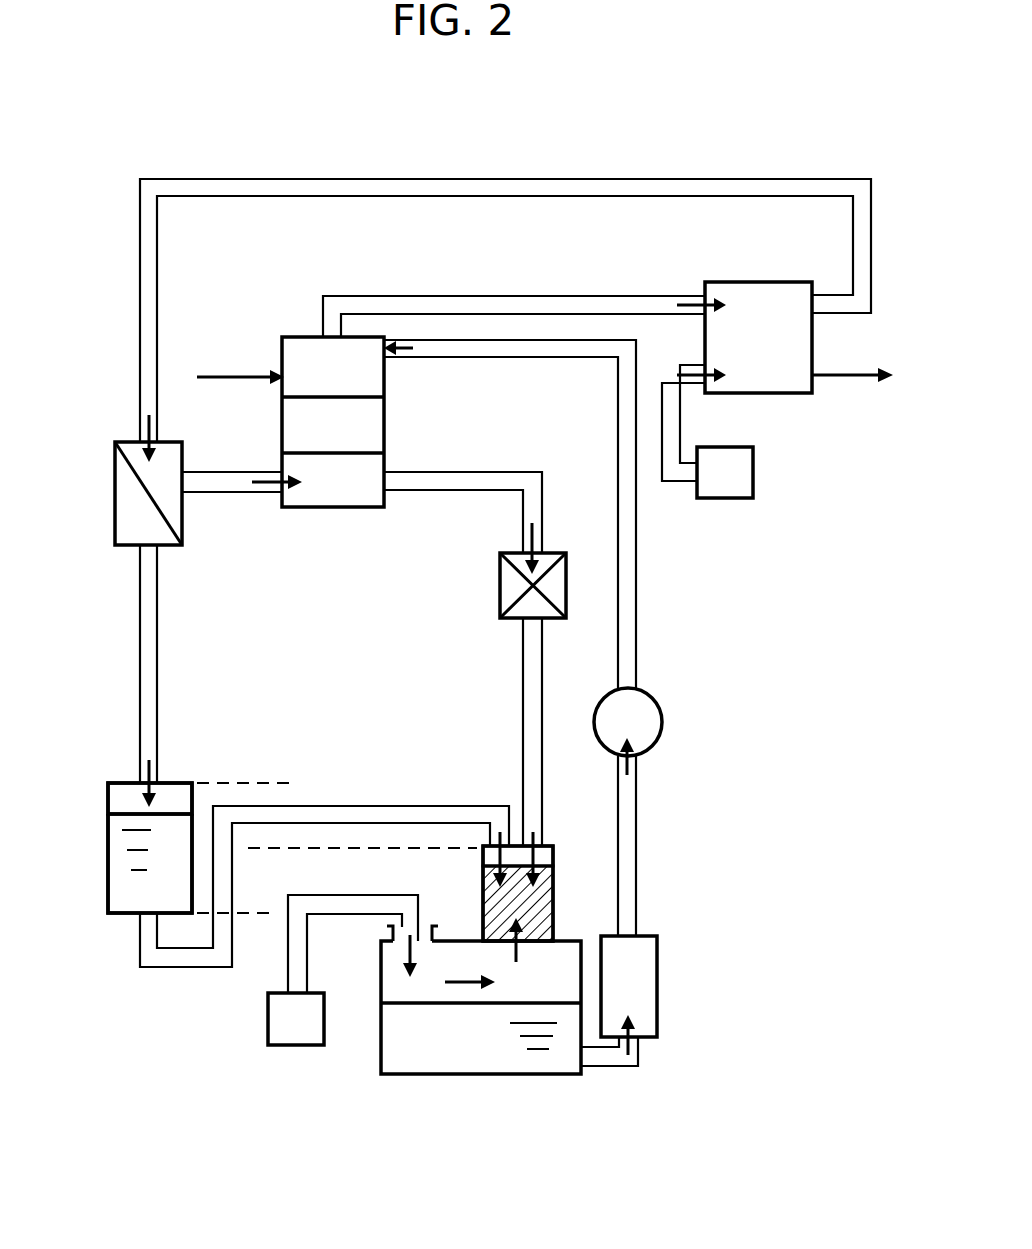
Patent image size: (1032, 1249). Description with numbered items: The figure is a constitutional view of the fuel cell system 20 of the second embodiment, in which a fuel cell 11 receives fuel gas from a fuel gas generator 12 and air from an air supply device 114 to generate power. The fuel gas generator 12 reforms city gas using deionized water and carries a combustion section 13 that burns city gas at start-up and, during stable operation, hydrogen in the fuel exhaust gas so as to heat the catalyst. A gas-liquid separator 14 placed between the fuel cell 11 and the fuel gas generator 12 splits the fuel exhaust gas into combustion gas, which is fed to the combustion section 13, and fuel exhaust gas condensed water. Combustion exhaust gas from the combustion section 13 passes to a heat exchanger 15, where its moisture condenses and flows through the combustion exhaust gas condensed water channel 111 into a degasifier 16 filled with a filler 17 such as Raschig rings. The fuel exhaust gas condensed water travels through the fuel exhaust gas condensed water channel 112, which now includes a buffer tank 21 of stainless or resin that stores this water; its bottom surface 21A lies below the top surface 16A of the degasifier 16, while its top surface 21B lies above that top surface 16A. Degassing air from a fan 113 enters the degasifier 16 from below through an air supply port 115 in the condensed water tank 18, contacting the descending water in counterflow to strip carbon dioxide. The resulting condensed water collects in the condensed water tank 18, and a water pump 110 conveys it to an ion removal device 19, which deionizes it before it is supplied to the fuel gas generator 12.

The fuel cell system 20 is at (170, 163).
The fuel cell 11 is at (797, 351).
The fuel gas generator 12 is at (300, 335).
The combustion section 13 is at (303, 490).
The gas-liquid separator 14 is at (130, 540).
The heat exchanger 15 is at (553, 557).
The degasifier 16 is at (557, 859).
The top surface of degasifier 16A is at (548, 843).
The filler 17 is at (541, 912).
The condensed water tank 18 is at (400, 1045).
The ion removal device 19 is at (657, 990).
The buffer tank 21 is at (105, 833).
The bottom surface of buffer tank 21A is at (119, 915).
The top surface of buffer tank 21B is at (118, 783).
The water pump 110 is at (663, 708).
The combustion exhaust gas condensed water channel 111 is at (542, 655).
The fuel exhaust gas condensed water channel 112 is at (158, 662).
The fan 113 is at (272, 1027).
The air supply device 114 is at (747, 478).
The air supply port 115 is at (425, 930).